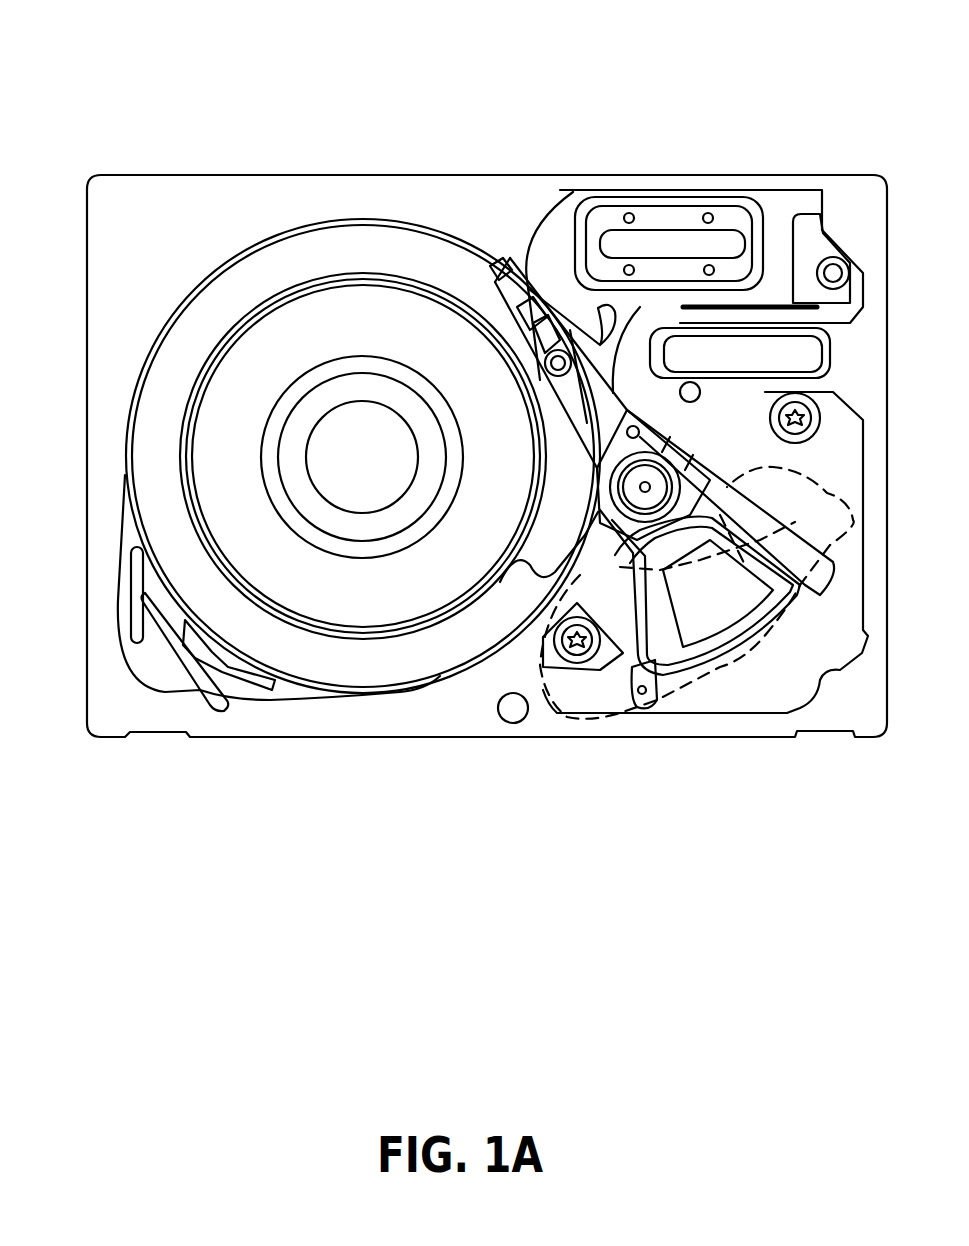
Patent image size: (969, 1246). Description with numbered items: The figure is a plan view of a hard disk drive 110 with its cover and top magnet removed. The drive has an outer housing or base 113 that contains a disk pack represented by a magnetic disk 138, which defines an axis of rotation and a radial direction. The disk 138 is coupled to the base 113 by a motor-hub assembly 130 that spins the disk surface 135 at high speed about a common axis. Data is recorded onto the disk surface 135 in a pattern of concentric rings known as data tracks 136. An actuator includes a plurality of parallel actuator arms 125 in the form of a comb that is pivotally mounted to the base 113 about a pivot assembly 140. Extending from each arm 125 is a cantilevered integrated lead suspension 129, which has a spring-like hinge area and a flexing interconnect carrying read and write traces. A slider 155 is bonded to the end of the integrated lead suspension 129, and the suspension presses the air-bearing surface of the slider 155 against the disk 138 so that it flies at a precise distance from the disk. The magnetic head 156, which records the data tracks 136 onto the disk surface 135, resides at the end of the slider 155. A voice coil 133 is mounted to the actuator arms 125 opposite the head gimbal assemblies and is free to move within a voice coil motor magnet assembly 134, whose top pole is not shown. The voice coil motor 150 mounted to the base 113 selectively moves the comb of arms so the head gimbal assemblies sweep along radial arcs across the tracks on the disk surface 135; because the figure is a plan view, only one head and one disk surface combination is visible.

The hard disk drive 110 is at (172, 105).
The base 113 is at (105, 413).
The actuator arm 125 is at (613, 357).
The integrated lead suspension 129 is at (540, 320).
The motor-hub assembly 130 is at (362, 450).
The voice coil 133 is at (680, 667).
The voice coil motor magnet assembly 134 is at (600, 720).
The disk surface 135 is at (283, 270).
The data tracks 136 is at (192, 527).
The magnetic disk 138 is at (193, 293).
The pivot assembly 140 is at (608, 515).
The voice coil motor 150 is at (720, 673).
The slider 155 is at (502, 265).
The magnetic head 156 is at (493, 280).